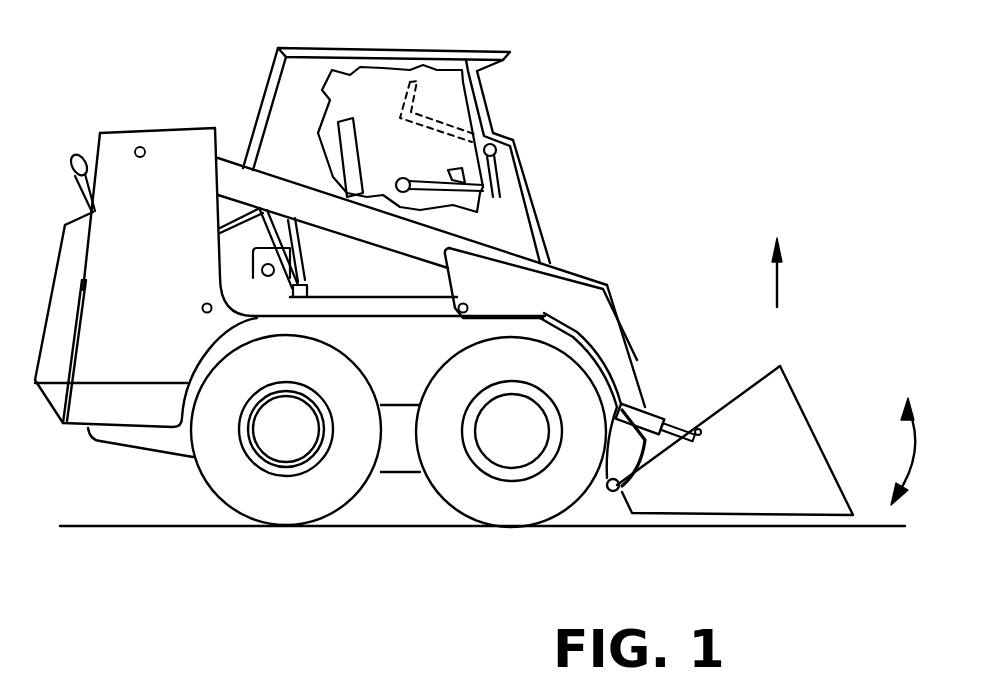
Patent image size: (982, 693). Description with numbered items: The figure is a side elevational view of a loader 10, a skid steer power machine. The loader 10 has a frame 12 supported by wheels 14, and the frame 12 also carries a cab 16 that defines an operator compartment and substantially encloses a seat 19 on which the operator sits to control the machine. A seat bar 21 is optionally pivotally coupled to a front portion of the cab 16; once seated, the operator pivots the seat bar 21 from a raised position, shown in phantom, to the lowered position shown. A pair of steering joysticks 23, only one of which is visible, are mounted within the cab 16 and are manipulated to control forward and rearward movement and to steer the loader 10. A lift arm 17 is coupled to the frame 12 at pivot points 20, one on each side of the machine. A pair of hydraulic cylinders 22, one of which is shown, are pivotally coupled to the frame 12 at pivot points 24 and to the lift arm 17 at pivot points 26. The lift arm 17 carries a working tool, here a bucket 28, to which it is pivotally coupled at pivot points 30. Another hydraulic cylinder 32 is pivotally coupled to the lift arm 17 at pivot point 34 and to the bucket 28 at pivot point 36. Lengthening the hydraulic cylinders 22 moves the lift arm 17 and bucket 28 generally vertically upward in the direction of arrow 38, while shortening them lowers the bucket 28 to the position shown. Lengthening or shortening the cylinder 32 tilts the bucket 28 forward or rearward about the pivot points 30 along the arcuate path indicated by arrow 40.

The loader 10 is at (527, 128).
The frame 12 is at (80, 410).
The wheels 14 is at (286, 515).
The cab 16 is at (432, 52).
The lift arm 17 is at (626, 313).
The seat 19 is at (345, 120).
The pivot points 20 is at (141, 146).
The seat bar 21 is at (498, 176).
The hydraulic cylinders 22 is at (402, 300).
The steering joysticks 23 is at (455, 172).
The pivot points 24 is at (202, 305).
The pivot points 26 is at (469, 306).
The bucket 28 is at (805, 418).
The pivot points 30 is at (607, 497).
The hydraulic cylinder 32 is at (650, 420).
The pivot point 34 is at (624, 403).
The pivot point 36 is at (705, 413).
The arrow 38 is at (780, 272).
The arrow 40 is at (910, 453).